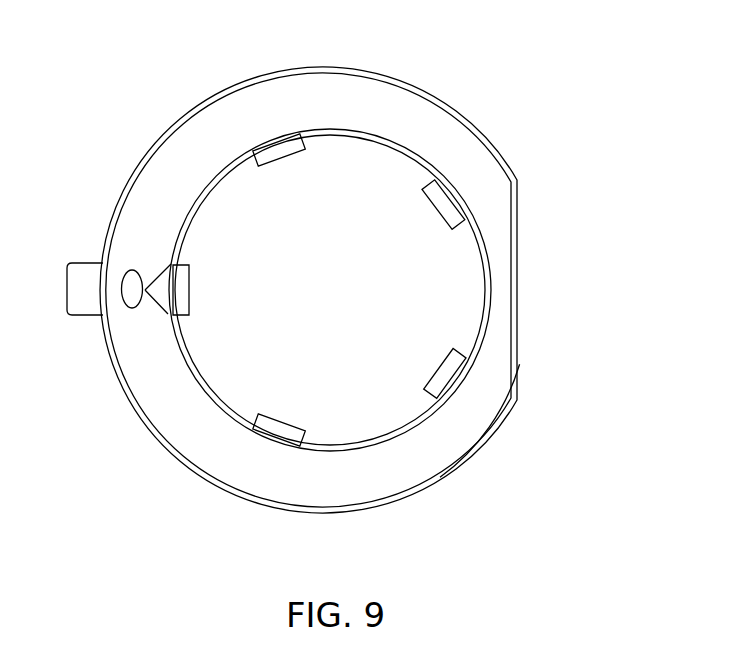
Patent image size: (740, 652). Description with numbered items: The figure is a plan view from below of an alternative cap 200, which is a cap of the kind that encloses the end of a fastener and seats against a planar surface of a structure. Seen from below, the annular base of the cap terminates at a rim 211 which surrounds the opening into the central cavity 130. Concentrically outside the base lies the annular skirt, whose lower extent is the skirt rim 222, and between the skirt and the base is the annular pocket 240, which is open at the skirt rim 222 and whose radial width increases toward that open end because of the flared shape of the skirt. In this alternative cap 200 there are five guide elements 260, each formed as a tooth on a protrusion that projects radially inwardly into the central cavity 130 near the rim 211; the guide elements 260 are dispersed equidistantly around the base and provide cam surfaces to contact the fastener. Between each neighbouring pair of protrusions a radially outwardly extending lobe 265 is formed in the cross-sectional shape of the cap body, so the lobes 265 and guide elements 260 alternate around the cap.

The cap 200 is at (520, 67).
The skirt rim 222 is at (475, 130).
The rim 211 is at (463, 453).
The annular pocket 240 is at (470, 405).
The central cavity 130 is at (460, 258).
The lobe 265 is at (197, 180).
The guide element 260 is at (273, 158).